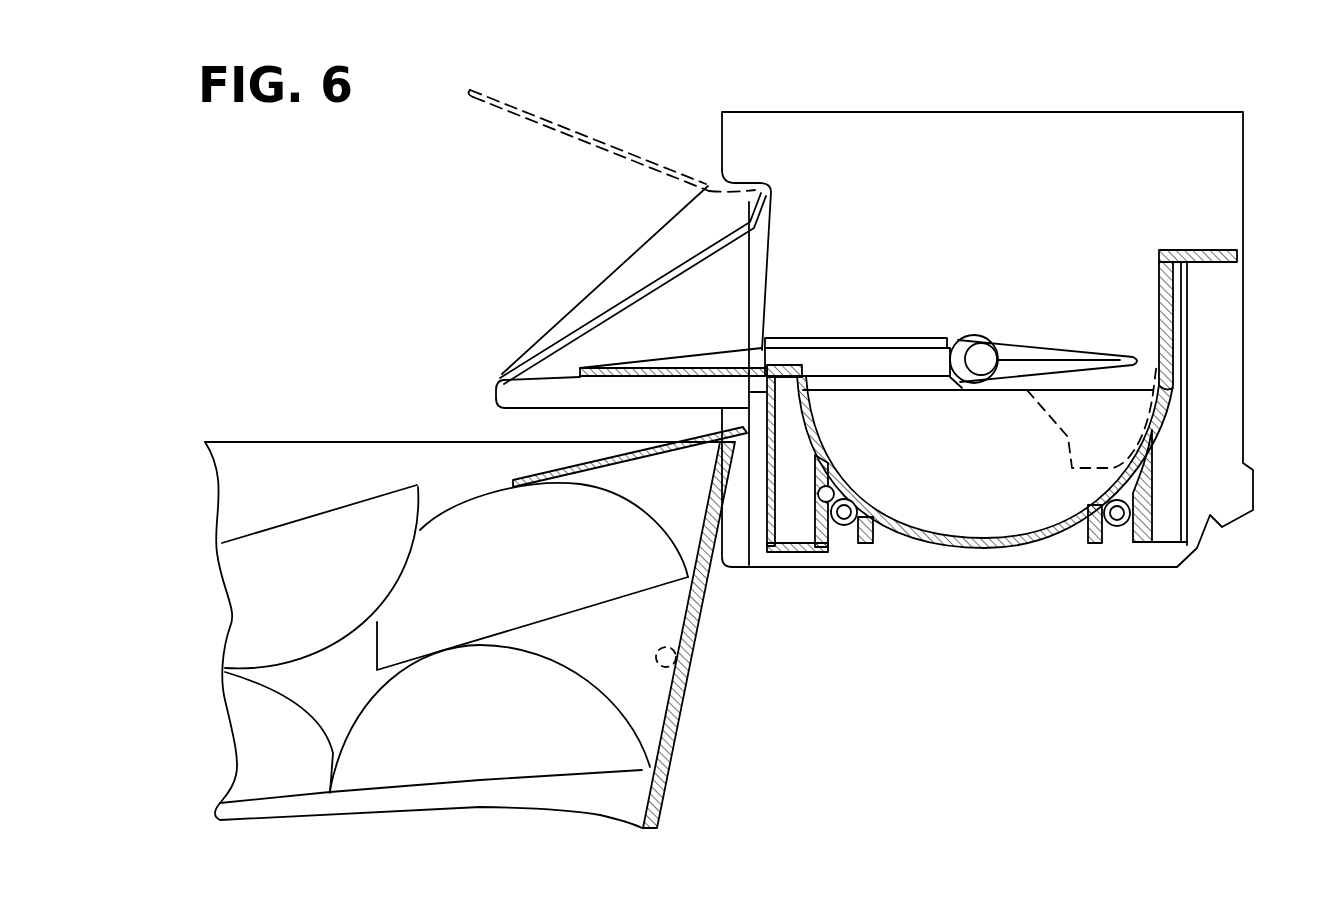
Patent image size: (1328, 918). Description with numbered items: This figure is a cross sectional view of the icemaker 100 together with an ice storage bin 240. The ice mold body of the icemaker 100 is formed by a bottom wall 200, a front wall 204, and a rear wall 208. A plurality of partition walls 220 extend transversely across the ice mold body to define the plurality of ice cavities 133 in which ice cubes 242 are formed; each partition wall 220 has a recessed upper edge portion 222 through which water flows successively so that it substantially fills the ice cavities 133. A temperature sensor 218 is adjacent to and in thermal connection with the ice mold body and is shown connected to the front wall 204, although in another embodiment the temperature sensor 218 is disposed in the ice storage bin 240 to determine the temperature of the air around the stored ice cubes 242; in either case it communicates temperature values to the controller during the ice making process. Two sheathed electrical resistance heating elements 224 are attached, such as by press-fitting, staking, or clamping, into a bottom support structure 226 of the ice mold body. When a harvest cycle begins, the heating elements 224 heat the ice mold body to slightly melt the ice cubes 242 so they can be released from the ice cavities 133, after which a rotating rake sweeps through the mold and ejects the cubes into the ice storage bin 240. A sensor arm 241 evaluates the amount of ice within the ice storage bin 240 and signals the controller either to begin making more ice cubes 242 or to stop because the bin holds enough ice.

The icemaker 100 is at (1033, 58).
The ice cavities 133 is at (984, 457).
The bottom wall 200 is at (961, 543).
The front wall 204 is at (835, 467).
The rear wall 208 is at (1177, 307).
The temperature sensor 218 is at (817, 500).
The partition walls 220 is at (1168, 378).
The recessed upper edge portion 222 is at (1072, 472).
The heating elements 224 is at (845, 527).
The bottom support structure 226 is at (1095, 545).
The ice storage bin 240 is at (676, 767).
The sensor arm 241 is at (718, 436).
The ice cubes 242 is at (522, 560).